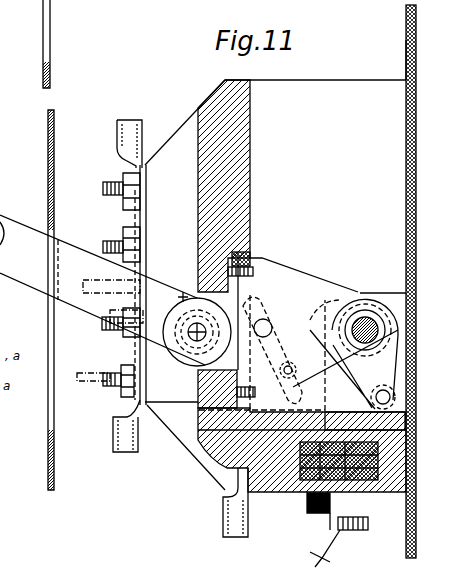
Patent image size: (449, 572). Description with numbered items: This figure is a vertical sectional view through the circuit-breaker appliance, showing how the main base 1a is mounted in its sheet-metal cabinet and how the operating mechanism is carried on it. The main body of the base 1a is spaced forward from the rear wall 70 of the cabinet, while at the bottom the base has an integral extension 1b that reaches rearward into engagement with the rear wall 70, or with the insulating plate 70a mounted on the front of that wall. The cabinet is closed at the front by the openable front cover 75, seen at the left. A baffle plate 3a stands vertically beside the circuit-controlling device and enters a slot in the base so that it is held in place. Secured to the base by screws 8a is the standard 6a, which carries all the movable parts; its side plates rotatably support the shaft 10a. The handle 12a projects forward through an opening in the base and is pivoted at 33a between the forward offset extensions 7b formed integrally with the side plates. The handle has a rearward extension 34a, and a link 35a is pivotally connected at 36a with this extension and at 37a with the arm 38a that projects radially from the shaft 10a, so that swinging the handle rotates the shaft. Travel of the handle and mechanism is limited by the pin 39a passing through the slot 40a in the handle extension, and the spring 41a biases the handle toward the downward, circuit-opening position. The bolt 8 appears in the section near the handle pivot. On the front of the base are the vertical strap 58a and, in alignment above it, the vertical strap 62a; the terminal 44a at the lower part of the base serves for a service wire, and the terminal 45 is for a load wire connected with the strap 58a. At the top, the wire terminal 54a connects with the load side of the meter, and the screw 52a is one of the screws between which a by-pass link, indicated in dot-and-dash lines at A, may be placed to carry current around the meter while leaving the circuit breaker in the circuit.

The main base 1a is at (213, 96).
The base extension 1b is at (268, 490).
The baffle plate 3a is at (315, 121).
The standard 6a is at (287, 270).
The forward offset extension 7b is at (190, 343).
The bolt 8 is at (198, 390).
The screw 8a is at (200, 262).
The shaft 10a is at (374, 310).
The handle 12a is at (70, 252).
The handle pivot 33a is at (197, 322).
The handle extension 34a is at (277, 350).
The link 35a is at (352, 369).
The link pivot 36a is at (292, 362).
The link pivot 37a is at (365, 424).
The arm 38a is at (345, 349).
The pin 39a is at (265, 320).
The slot 40a is at (261, 353).
The spring 41a is at (180, 297).
The terminal 44a is at (223, 527).
The bracket 45 is at (113, 453).
The screw 52a is at (125, 412).
The wire terminal 54a is at (117, 139).
The vertical strap 58a is at (143, 354).
The vertical strap 62a is at (140, 219).
The rear wall 70 is at (406, 35).
The insulating plate 70a is at (406, 80).
The front cover 75 is at (48, 186).
The by-pass link position A is at (125, 414).